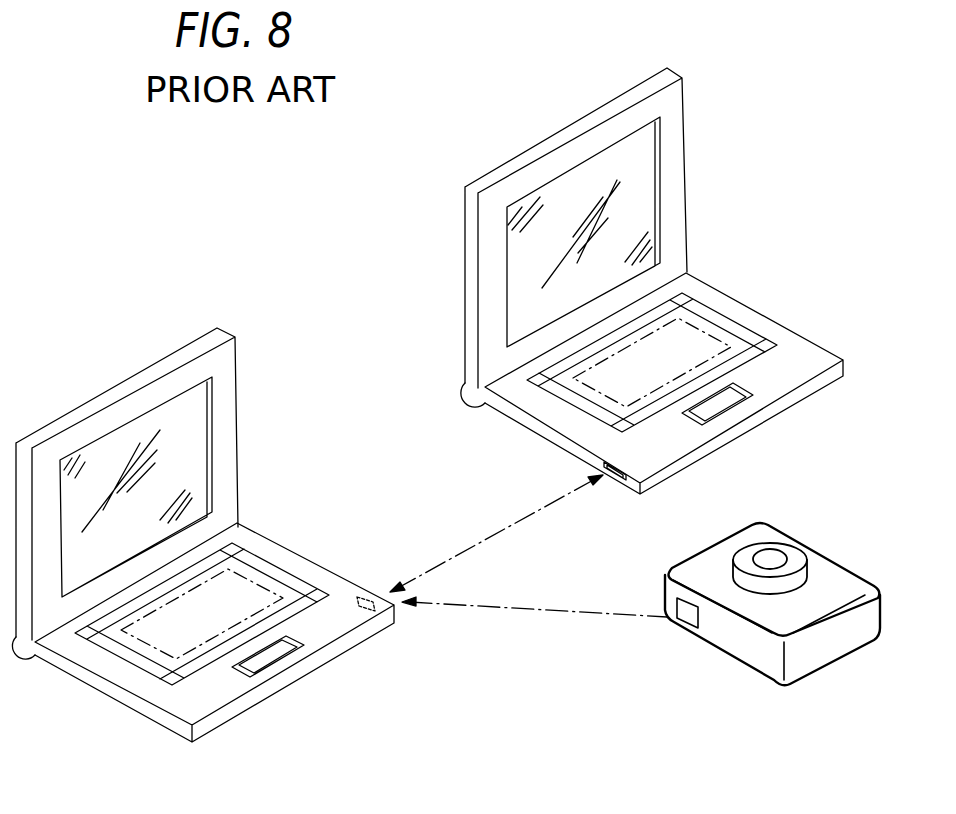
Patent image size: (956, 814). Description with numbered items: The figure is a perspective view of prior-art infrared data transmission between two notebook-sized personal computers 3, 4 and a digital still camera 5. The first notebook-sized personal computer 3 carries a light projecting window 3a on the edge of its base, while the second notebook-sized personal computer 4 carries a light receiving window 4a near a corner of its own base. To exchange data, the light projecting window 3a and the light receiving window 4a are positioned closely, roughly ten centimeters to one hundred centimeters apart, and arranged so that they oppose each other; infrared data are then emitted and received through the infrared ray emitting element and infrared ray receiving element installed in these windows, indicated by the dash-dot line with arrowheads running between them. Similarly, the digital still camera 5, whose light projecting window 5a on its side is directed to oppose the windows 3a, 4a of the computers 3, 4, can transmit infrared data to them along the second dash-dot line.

The notebook-sized personal computer 3 is at (570, 120).
The light projecting window 3a is at (613, 480).
The notebook-sized personal computer 4 is at (108, 384).
The light receiving window 4a is at (367, 593).
The digital still camera 5 is at (766, 525).
The light projecting window 5a is at (687, 630).